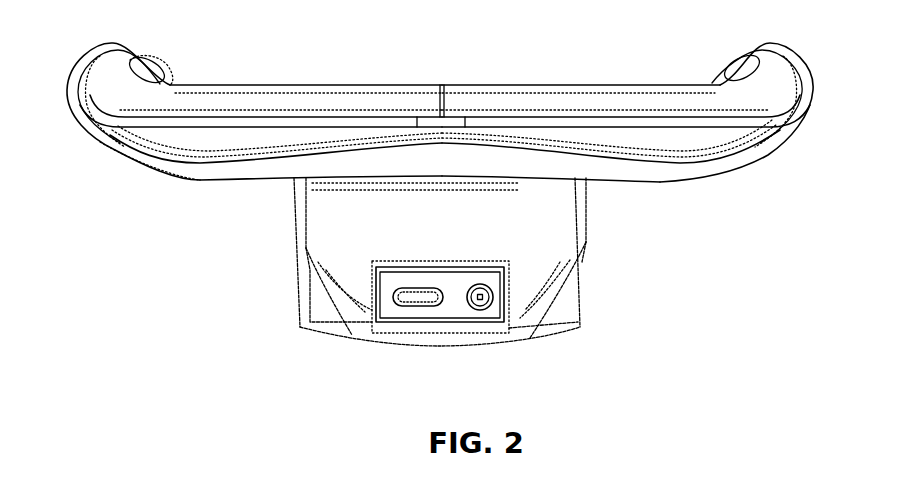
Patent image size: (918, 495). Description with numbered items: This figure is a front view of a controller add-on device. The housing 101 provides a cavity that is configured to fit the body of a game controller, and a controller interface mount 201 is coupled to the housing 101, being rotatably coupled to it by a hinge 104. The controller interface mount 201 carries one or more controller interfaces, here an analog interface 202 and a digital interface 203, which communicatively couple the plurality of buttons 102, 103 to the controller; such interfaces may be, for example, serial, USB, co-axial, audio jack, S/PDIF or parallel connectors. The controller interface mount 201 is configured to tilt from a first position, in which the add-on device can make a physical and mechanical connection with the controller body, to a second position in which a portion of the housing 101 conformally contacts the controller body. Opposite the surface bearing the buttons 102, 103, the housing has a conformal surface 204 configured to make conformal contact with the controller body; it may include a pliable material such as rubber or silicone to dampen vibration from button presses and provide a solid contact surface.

The housing 101 is at (300, 278).
The button 102 is at (222, 85).
The button 103 is at (613, 85).
The hinge 104 is at (373, 308).
The controller interface mount 201 is at (443, 273).
The analog interface 202 is at (411, 294).
The digital interface 203 is at (480, 288).
The conformal surface 204 is at (648, 178).